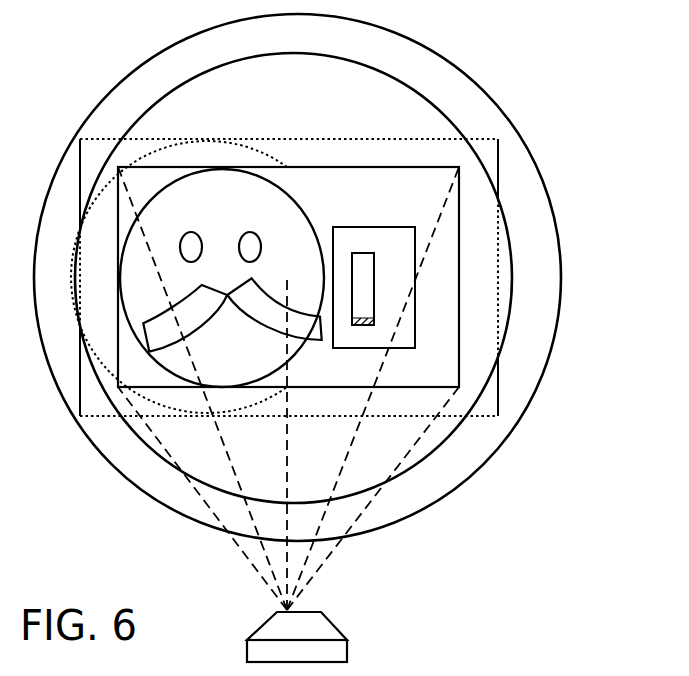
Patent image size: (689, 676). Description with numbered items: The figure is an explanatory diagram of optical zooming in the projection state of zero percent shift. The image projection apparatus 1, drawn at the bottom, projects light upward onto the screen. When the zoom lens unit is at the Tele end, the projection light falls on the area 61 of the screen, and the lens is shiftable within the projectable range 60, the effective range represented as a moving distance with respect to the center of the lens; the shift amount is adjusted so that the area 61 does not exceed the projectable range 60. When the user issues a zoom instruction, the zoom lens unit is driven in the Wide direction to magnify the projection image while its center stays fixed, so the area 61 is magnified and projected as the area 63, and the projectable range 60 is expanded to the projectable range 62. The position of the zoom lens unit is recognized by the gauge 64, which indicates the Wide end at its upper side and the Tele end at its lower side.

The image projection apparatus 1 is at (322, 630).
The projectable range 60 is at (425, 461).
The area 61 is at (284, 167).
The projectable range 62 is at (507, 438).
The area 63 is at (481, 139).
The gauge 64 is at (390, 303).